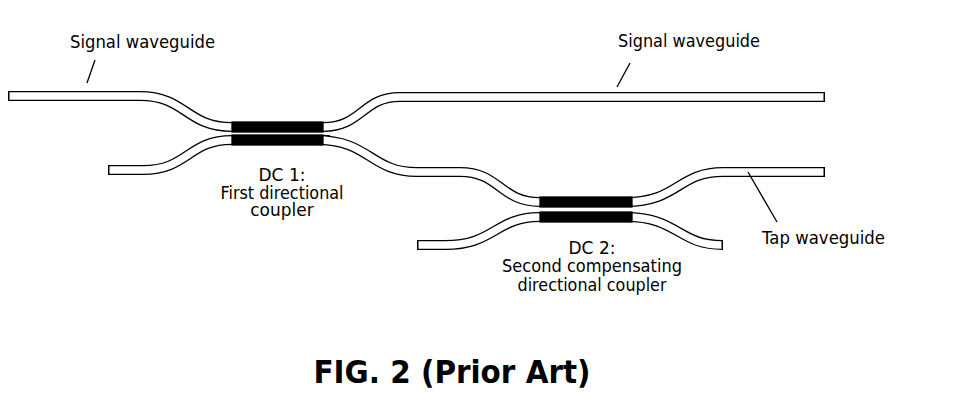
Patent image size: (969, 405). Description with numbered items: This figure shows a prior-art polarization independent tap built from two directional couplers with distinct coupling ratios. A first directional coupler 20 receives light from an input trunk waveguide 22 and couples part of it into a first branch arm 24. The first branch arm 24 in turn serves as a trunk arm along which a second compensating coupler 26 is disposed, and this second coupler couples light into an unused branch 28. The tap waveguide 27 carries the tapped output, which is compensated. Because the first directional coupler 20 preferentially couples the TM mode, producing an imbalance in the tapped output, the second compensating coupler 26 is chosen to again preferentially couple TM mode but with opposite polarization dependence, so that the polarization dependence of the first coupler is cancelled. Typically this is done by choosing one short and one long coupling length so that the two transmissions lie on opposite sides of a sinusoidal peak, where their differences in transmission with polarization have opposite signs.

The first directional coupler 20 is at (287, 122).
The input trunk waveguide 22 is at (40, 91).
The first branch arm 24 is at (436, 168).
The second compensating coupler 26 is at (570, 198).
The tap waveguide 27 is at (748, 168).
The unused branch 28 is at (722, 252).